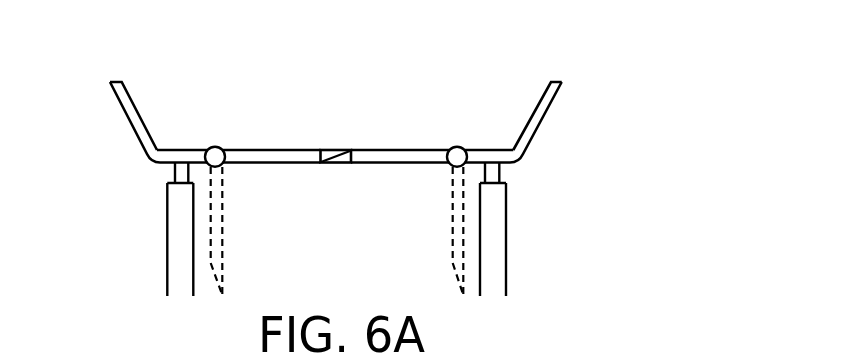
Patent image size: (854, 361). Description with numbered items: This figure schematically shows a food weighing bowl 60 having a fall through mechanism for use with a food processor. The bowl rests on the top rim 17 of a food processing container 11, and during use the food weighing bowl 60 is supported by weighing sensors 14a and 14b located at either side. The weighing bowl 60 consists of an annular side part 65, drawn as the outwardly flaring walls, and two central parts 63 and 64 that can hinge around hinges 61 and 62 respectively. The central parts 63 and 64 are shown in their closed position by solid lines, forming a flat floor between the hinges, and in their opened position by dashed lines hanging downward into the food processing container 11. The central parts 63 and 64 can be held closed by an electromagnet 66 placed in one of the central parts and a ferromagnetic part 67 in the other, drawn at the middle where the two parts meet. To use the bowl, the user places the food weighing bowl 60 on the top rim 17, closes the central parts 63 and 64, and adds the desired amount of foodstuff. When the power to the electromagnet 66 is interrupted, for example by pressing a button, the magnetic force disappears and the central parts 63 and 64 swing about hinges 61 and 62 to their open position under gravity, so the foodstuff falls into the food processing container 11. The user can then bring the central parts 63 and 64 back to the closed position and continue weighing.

The food weighing bowl 60 is at (642, 67).
The hinge 61 is at (217, 146).
The hinge 62 is at (457, 146).
The central part 63 is at (277, 156).
The central part 64 is at (397, 156).
The annular side part 65 is at (117, 100).
The electromagnet 66 is at (330, 150).
The ferromagnetic part 67 is at (341, 163).
The weighing sensor 14a is at (172, 175).
The weighing sensor 14b is at (502, 175).
The top rim 17 is at (167, 185).
The food processing container 11 is at (173, 272).